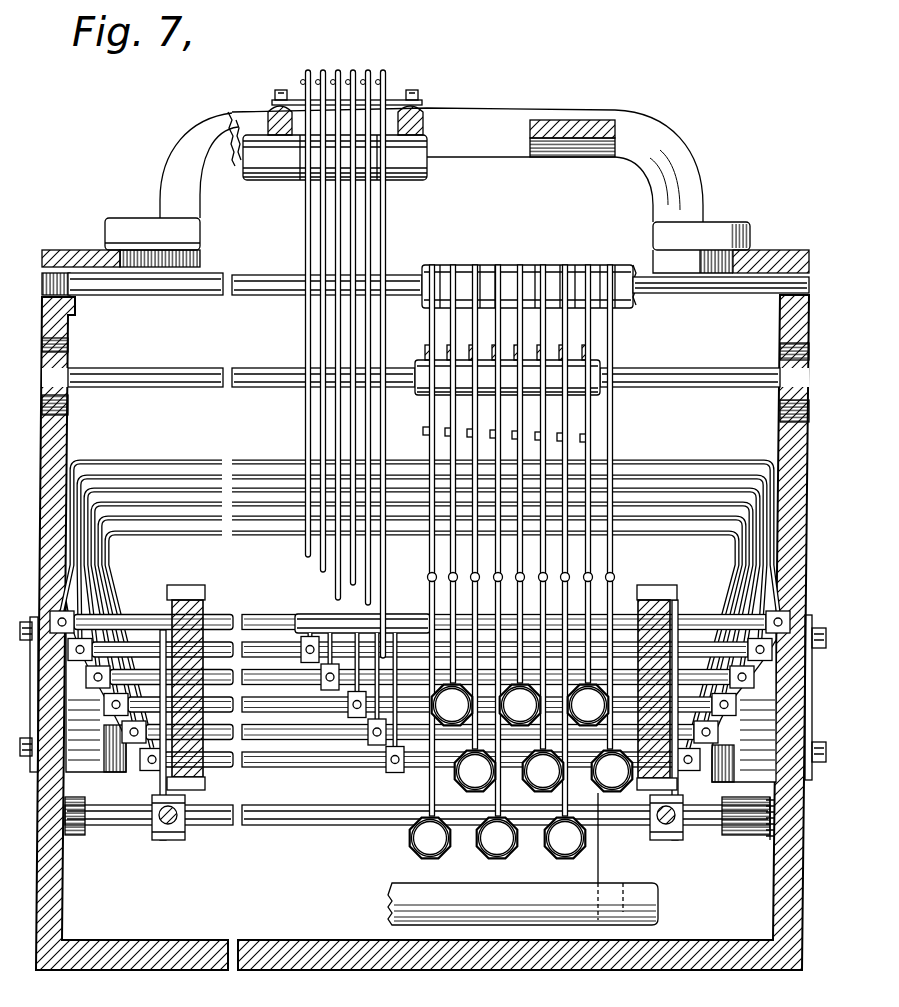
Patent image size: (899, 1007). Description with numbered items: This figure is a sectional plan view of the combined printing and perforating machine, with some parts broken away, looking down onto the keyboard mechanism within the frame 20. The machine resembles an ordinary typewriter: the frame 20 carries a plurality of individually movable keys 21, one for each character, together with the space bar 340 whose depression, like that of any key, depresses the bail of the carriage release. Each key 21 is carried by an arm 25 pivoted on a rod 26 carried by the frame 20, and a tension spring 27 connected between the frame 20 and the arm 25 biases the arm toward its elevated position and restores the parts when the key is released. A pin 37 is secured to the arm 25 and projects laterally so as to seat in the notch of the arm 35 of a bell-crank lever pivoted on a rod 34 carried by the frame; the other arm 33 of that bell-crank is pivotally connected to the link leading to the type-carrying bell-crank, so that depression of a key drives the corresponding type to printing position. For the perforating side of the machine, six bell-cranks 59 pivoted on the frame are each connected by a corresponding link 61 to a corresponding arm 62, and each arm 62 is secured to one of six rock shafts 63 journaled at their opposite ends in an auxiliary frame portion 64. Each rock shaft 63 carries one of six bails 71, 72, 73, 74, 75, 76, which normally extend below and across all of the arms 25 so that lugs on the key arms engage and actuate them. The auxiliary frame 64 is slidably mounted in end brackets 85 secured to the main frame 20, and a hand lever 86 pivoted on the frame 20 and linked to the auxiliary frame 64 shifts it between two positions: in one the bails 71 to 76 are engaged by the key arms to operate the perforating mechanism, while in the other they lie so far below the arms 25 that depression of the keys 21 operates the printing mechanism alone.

The frame 20 is at (62, 328).
The key 21 is at (440, 854).
The arm 25 is at (500, 601).
The rod 26 is at (272, 280).
The tension spring 27 is at (594, 578).
The arm of bell-crank lever 33 is at (425, 352).
The rod 34 is at (246, 370).
The arm of bell-crank 35 is at (448, 404).
The pin 37 is at (468, 434).
The bell-crank 59 is at (365, 118).
The link 61 is at (335, 425).
The arm 62 is at (308, 575).
The rock shaft 63 is at (260, 678).
The auxiliary frame portion 64 is at (196, 602).
The bail 71 is at (100, 462).
The bail 72 is at (120, 477).
The bail 73 is at (150, 490).
The bail 74 is at (126, 505).
The bail 75 is at (170, 518).
The bail 76 is at (212, 533).
The end bracket 85 is at (808, 618).
The hand lever 86 is at (770, 840).
The space bar 340 is at (523, 904).